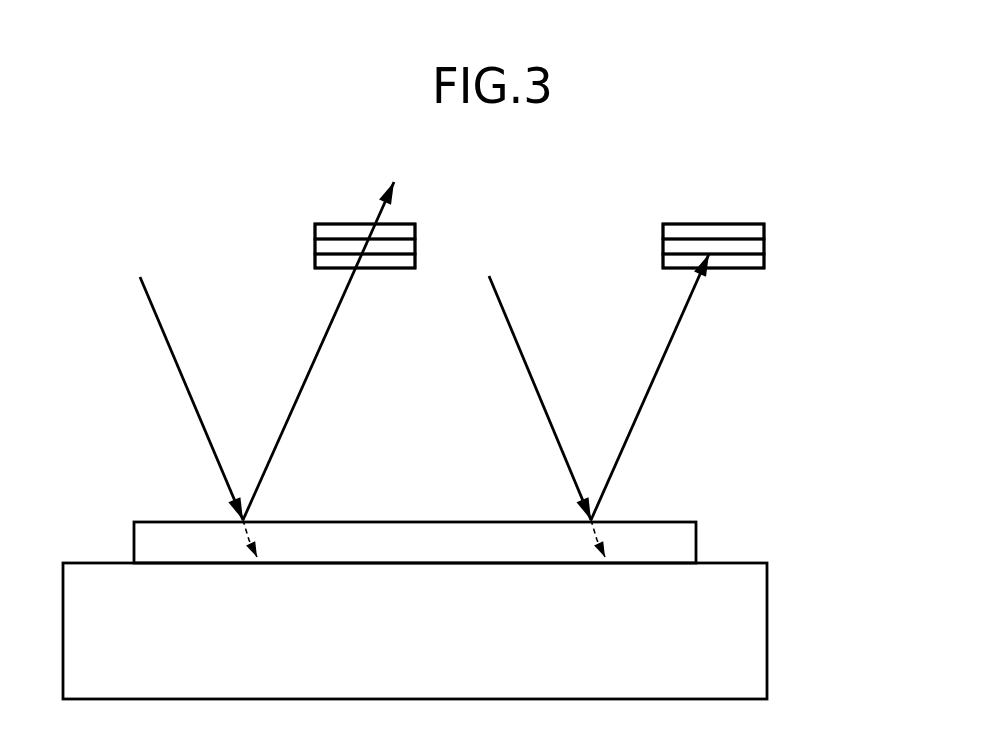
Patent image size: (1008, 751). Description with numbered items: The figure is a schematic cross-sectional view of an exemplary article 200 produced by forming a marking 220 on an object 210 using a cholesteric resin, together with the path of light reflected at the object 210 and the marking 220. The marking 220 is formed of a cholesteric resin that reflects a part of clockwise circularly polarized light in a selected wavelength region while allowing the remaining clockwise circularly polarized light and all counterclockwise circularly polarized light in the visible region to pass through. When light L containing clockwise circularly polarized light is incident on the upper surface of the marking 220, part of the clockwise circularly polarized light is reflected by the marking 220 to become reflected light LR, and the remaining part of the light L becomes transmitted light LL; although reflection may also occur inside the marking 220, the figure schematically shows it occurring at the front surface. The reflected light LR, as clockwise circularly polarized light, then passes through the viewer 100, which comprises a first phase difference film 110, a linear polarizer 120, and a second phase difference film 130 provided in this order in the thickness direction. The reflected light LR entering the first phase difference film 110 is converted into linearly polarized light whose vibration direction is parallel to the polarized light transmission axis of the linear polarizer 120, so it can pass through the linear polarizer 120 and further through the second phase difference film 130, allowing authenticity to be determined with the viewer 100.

The viewer 100 is at (410, 223).
The first phase difference film 110 is at (315, 261).
The linear polarizer 120 is at (315, 247).
The second phase difference film 130 is at (315, 229).
The article 200 is at (840, 426).
The object 210 is at (745, 630).
The marking 220 is at (675, 543).
The light L is at (155, 322).
The reflected light LR is at (307, 385).
The transmitted light LL is at (250, 543).